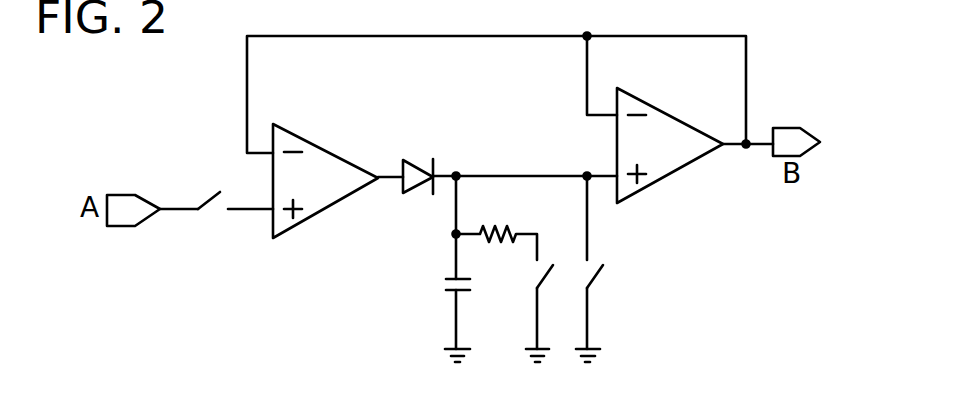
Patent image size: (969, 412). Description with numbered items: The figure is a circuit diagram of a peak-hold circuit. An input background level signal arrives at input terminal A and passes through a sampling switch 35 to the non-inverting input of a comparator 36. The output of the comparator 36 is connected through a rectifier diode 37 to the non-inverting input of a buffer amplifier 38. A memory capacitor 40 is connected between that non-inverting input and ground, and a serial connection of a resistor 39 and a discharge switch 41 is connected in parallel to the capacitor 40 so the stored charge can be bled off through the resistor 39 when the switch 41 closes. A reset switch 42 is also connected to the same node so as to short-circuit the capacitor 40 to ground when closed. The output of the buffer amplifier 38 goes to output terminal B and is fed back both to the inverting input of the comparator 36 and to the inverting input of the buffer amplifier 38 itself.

The sampling switch 35 is at (205, 198).
The comparator 36 is at (312, 144).
The rectifier diode 37 is at (415, 159).
The buffer amplifier 38 is at (677, 120).
The resistor 39 is at (500, 226).
The memory capacitor 40 is at (438, 287).
The discharge switch 41 is at (535, 283).
The reset switch 42 is at (596, 281).